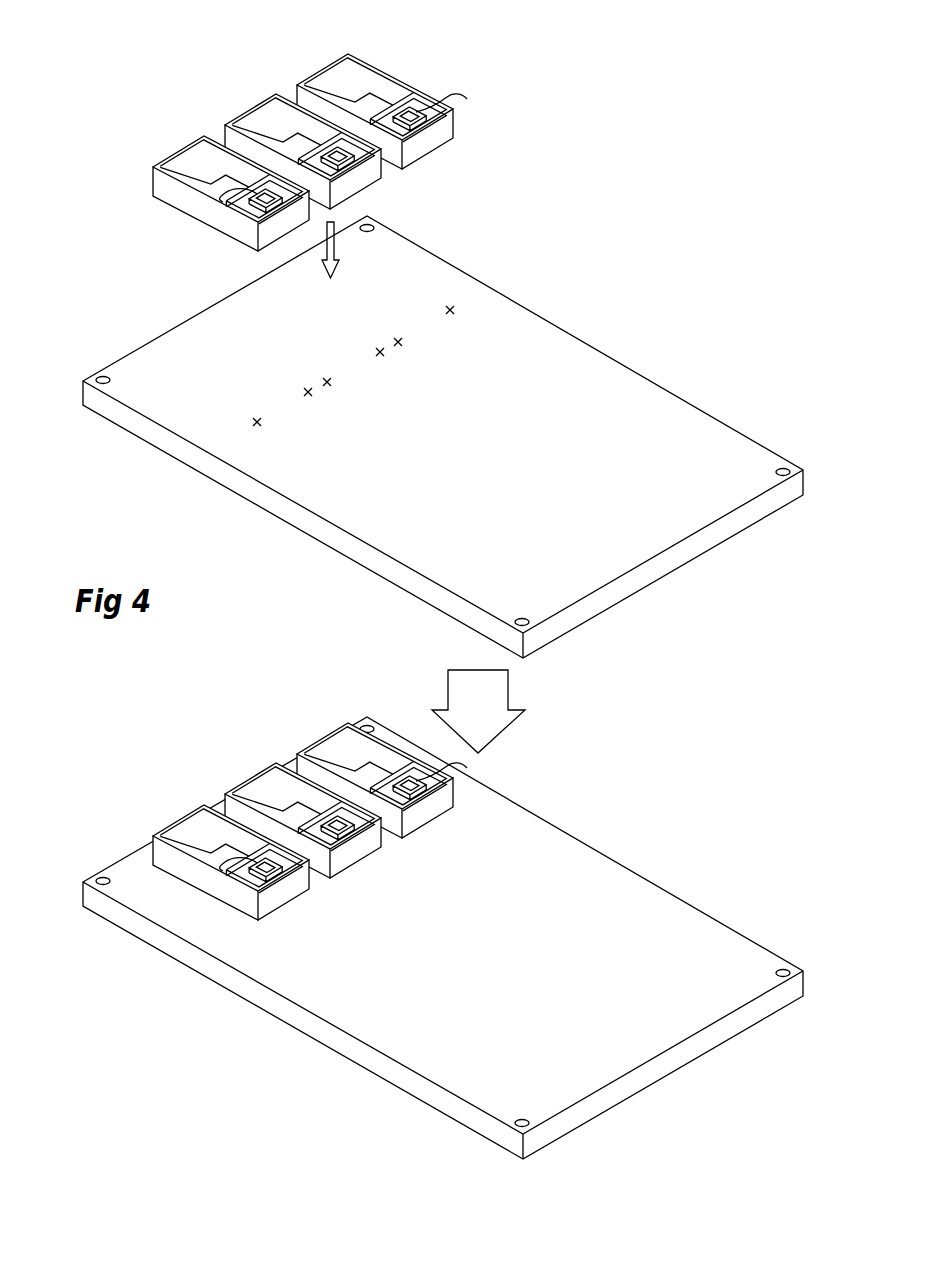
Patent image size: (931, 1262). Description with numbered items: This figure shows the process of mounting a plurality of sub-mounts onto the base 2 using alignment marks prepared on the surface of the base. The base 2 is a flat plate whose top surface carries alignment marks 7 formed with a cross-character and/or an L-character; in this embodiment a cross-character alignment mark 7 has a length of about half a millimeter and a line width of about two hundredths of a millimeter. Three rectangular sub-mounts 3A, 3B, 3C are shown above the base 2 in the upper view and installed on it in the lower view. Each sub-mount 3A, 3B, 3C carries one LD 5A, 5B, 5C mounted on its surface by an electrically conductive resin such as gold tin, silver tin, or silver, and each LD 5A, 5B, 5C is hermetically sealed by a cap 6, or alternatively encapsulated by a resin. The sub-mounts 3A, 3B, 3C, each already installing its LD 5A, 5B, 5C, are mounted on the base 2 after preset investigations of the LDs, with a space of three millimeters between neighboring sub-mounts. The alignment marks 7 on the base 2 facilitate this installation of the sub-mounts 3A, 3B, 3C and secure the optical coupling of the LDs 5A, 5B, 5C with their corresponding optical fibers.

The base 2 is at (662, 415).
The sub-mount 3A is at (165, 160).
The sub-mount 3B is at (240, 112).
The sub-mount 3C is at (308, 76).
The LD 5A is at (258, 203).
The LD 5B is at (348, 157).
The LD 5C is at (420, 118).
The cap 6 is at (445, 100).
The alignment mark 7 is at (405, 342).